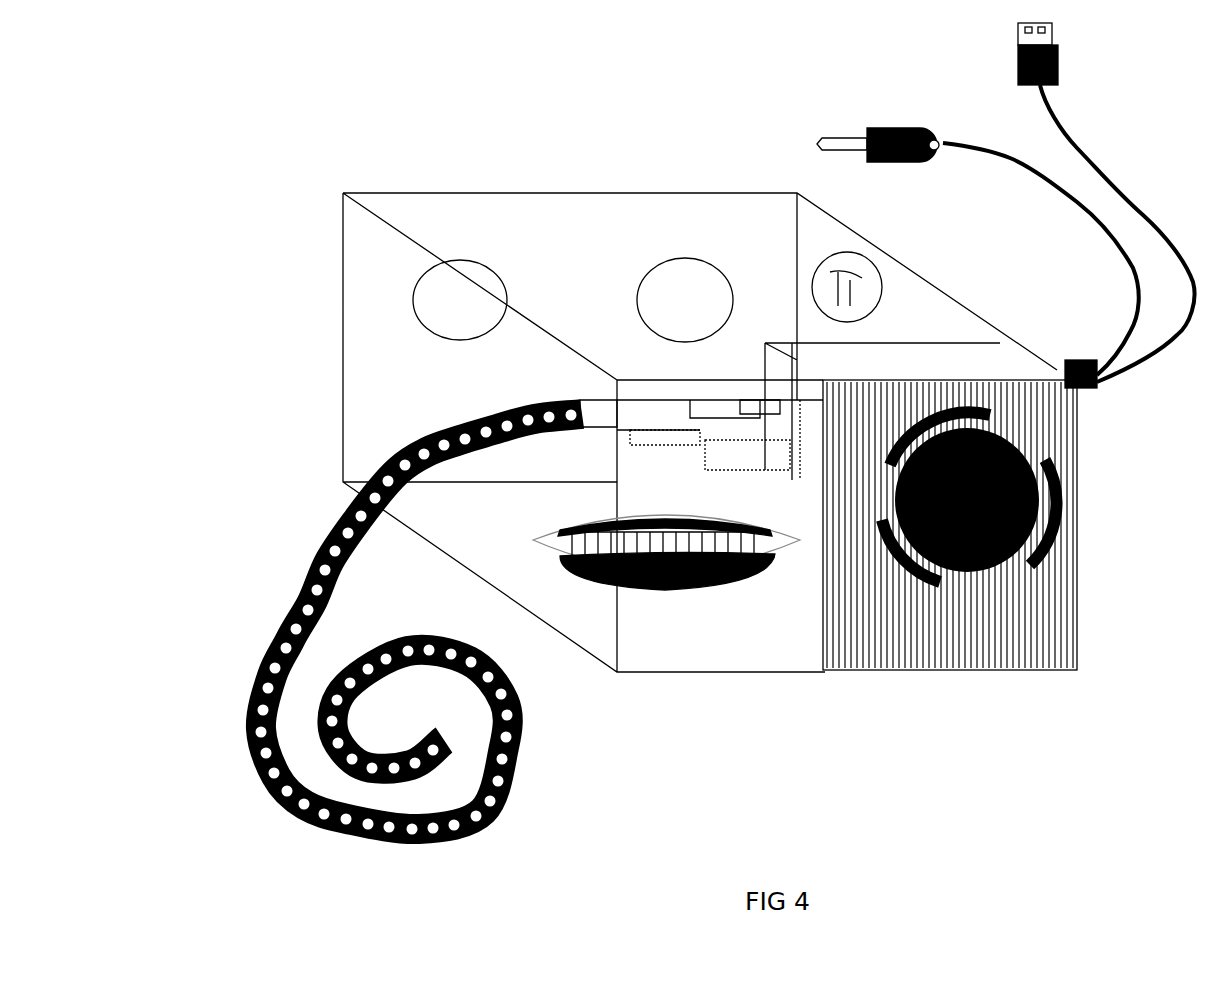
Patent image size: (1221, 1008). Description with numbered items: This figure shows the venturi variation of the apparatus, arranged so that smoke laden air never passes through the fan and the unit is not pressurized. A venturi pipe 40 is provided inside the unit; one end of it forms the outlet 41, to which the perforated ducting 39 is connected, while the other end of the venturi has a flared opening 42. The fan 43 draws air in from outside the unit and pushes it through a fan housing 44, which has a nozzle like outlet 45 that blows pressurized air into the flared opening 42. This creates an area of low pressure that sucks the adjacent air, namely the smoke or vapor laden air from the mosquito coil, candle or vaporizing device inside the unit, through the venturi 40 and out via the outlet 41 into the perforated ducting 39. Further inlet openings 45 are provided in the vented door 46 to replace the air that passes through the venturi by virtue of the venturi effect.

The perforated ducting 39 is at (303, 553).
The venturi pipe 40 is at (643, 430).
The outlet 41 is at (582, 387).
The flared opening 42 is at (722, 452).
The fan 43 is at (1080, 513).
The fan housing 44 is at (823, 432).
The nozzle like outlet 45 is at (400, 307).
The vented door 46 is at (623, 225).